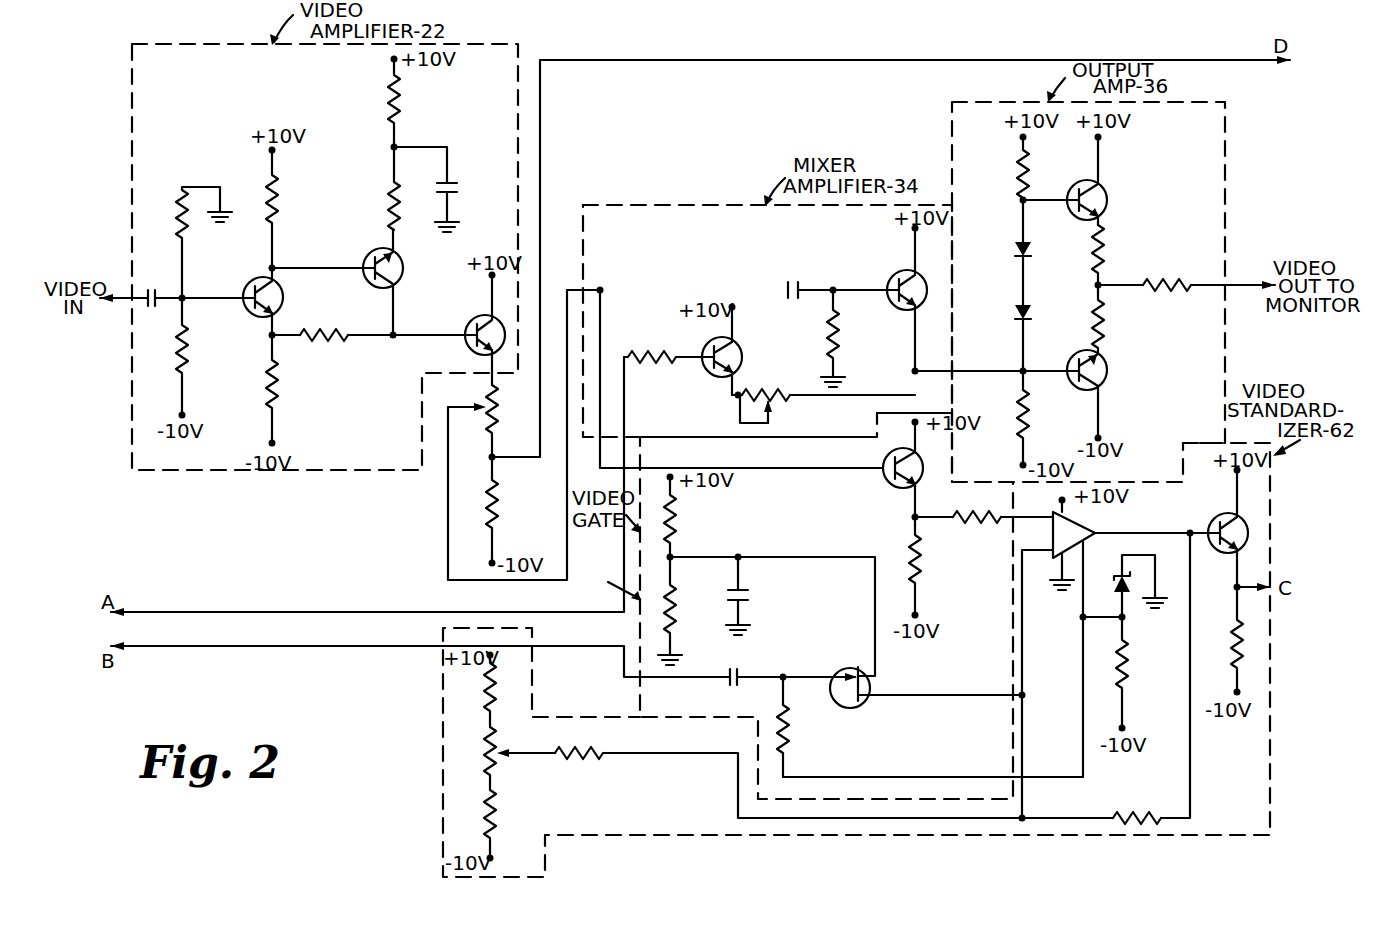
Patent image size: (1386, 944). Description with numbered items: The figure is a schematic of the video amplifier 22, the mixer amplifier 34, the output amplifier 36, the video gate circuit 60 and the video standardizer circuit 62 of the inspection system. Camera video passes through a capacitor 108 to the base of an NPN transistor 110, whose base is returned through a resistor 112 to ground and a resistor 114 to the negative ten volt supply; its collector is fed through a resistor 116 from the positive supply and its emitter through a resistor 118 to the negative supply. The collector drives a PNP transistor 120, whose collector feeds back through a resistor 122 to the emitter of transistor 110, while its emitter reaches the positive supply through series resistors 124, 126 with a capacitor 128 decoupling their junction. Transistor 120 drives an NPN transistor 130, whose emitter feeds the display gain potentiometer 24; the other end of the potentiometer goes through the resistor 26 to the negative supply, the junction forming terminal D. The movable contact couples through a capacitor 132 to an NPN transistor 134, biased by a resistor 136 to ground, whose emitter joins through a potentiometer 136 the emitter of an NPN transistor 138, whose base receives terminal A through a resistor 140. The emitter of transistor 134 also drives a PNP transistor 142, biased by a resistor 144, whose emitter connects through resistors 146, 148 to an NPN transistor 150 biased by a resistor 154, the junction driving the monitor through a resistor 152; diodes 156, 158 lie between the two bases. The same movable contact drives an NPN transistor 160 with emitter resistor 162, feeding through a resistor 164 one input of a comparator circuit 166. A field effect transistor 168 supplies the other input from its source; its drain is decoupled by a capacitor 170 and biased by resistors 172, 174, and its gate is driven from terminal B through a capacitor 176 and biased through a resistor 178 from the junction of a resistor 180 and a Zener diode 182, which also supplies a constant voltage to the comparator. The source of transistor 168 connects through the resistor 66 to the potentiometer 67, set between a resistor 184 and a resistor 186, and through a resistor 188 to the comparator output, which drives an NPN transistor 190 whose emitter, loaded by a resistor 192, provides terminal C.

The video amplifier 22 is at (325, 257).
The display gain potentiometer 24 is at (498, 415).
The resistor 26 is at (498, 511).
The mixer amplifier 34 is at (767, 321).
The output amplifier 36 is at (1088, 292).
The video gate circuit 60 is at (796, 606).
The video standardizer circuit 62 is at (856, 660).
The resistor 66 is at (579, 760).
The potentiometer 67 is at (499, 767).
The capacitor 108 is at (156, 290).
The NPN transistor 110 is at (284, 300).
The resistor 112 is at (189, 260).
The resistor 114 is at (191, 349).
The resistor 116 is at (281, 200).
The resistor 118 is at (281, 394).
The PNP transistor 120 is at (400, 285).
The resistor 122 is at (328, 343).
The resistor 124 is at (386, 205).
The resistor 126 is at (388, 100).
The capacitor 128 is at (452, 180).
The NPN transistor 130 is at (467, 325).
The capacitor 132 is at (793, 279).
The NPN transistor 134 is at (902, 272).
The resistor / potentiometer 136 is at (843, 338).
The NPN transistor 138 is at (746, 360).
The resistor 140 is at (669, 376).
The PNP transistor 142 is at (1110, 368).
The resistor 144 is at (1032, 415).
The resistor 146 is at (1110, 325).
The resistor 148 is at (1108, 246).
The NPN transistor 150 is at (1108, 192).
The resistor 152 is at (1161, 280).
The resistor 154 is at (1031, 170).
The diode 156 is at (1031, 255).
The diode 158 is at (1033, 316).
The NPN transistor 160 is at (889, 480).
The resistor 162 is at (929, 560).
The resistor 164 is at (958, 511).
The comparator circuit 166 is at (1085, 528).
The field effect transistor 168 is at (864, 704).
The capacitor 170 is at (747, 598).
The resistor 172 is at (677, 612).
The resistor 174 is at (679, 523).
The capacitor 176 is at (741, 671).
The resistor 178 is at (796, 740).
The resistor 180 is at (1128, 678).
The Zener diode 182 is at (1126, 600).
The resistor 184 is at (486, 681).
The resistor 186 is at (486, 810).
The resistor 188 is at (1151, 812).
The NPN transistor 190 is at (1219, 515).
The resistor 192 is at (1230, 641).